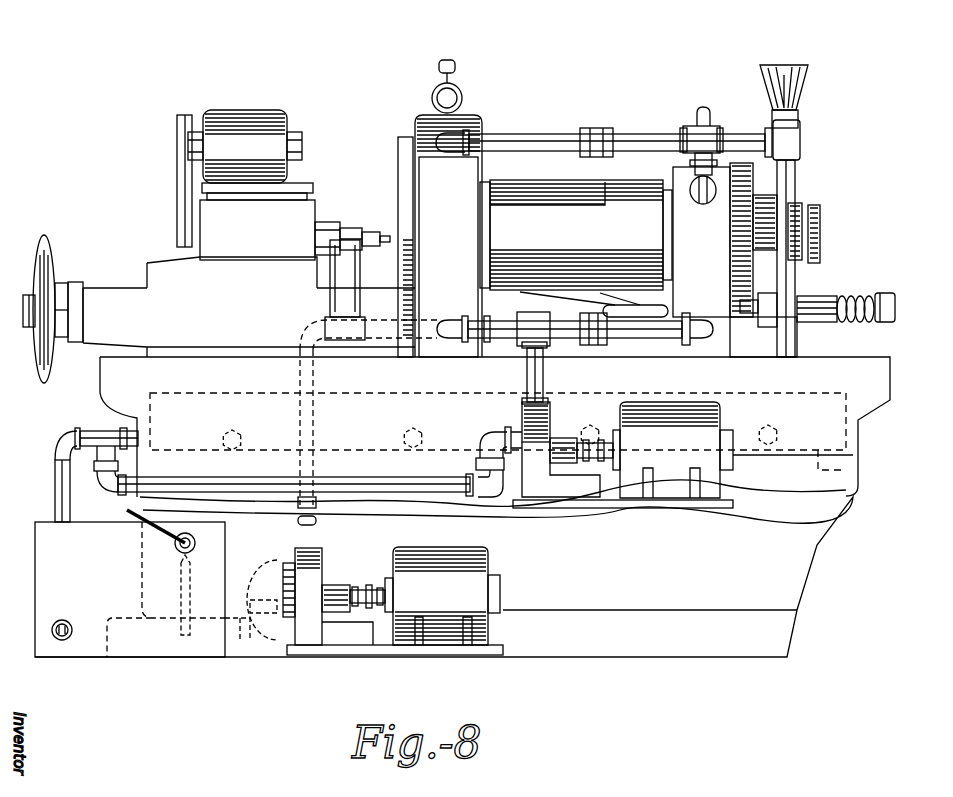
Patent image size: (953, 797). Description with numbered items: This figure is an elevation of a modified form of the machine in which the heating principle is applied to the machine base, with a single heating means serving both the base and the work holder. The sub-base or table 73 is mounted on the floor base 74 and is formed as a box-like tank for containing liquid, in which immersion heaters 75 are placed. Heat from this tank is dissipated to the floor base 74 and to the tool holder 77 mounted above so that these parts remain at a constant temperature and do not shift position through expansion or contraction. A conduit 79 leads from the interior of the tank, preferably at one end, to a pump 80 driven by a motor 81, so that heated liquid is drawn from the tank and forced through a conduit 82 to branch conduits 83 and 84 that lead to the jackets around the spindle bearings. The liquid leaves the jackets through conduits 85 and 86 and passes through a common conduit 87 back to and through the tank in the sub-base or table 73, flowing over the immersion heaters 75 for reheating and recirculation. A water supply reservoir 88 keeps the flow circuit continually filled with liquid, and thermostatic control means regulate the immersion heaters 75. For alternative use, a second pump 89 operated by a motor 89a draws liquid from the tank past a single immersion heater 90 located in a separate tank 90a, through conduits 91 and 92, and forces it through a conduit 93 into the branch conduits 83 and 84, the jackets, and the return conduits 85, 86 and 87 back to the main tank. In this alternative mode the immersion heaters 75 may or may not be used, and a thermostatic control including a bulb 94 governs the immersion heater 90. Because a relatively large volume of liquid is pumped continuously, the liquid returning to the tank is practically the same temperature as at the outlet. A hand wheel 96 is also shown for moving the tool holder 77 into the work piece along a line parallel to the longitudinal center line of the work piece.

The sub-base or table 73 is at (880, 380).
The floor base 74 is at (680, 642).
The immersion heaters 75 is at (778, 430).
The tool holder 77 is at (310, 215).
The conduit 79 is at (110, 482).
The pump 80 is at (518, 401).
The motor 81 is at (718, 418).
The conduit 82 is at (545, 377).
The branch conduit 83 is at (670, 322).
The branch conduit 84 is at (478, 319).
The conduit 85 is at (718, 150).
The conduit 86 is at (520, 140).
The common conduit 87 is at (795, 184).
The water supply reservoir 88 is at (806, 91).
The pump 89 is at (296, 566).
The motor 89a is at (482, 566).
The immersion heater 90 is at (69, 625).
The tank 90a is at (38, 548).
The conduit 91 is at (53, 473).
The conduit 92 is at (257, 585).
The conduit 93 is at (307, 390).
The bulb 94 is at (181, 598).
The hand wheel 96 is at (50, 252).